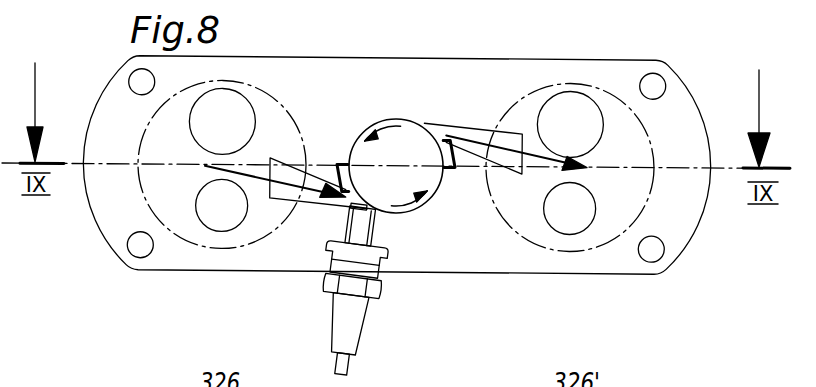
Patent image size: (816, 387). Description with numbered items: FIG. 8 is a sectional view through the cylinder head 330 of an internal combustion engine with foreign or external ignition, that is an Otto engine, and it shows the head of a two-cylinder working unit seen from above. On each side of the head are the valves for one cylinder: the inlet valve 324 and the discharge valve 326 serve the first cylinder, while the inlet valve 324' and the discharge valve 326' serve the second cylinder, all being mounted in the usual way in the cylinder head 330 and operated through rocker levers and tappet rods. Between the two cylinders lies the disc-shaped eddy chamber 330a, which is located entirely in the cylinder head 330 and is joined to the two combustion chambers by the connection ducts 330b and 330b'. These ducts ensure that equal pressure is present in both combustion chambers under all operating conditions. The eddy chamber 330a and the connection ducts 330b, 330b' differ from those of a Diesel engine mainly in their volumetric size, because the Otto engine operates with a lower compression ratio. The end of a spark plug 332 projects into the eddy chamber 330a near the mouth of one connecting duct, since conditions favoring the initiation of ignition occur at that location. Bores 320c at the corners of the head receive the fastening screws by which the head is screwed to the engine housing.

The inlet valve 324 is at (236, 84).
The discharge valve 326 is at (212, 251).
The inlet valve 324' is at (582, 87).
The discharge valve 326' is at (569, 254).
The cylinder head 330 is at (652, 60).
The eddy chamber 330a is at (402, 150).
The connection duct 330b is at (286, 240).
The connection duct 330b' is at (506, 95).
The bore 320c is at (650, 261).
The spark plug 332 is at (342, 338).